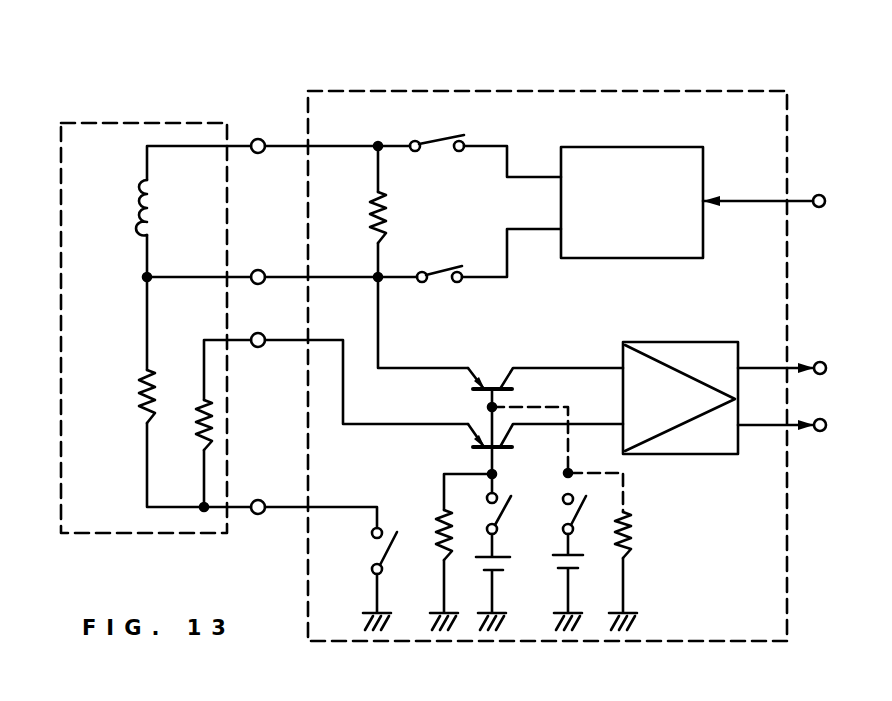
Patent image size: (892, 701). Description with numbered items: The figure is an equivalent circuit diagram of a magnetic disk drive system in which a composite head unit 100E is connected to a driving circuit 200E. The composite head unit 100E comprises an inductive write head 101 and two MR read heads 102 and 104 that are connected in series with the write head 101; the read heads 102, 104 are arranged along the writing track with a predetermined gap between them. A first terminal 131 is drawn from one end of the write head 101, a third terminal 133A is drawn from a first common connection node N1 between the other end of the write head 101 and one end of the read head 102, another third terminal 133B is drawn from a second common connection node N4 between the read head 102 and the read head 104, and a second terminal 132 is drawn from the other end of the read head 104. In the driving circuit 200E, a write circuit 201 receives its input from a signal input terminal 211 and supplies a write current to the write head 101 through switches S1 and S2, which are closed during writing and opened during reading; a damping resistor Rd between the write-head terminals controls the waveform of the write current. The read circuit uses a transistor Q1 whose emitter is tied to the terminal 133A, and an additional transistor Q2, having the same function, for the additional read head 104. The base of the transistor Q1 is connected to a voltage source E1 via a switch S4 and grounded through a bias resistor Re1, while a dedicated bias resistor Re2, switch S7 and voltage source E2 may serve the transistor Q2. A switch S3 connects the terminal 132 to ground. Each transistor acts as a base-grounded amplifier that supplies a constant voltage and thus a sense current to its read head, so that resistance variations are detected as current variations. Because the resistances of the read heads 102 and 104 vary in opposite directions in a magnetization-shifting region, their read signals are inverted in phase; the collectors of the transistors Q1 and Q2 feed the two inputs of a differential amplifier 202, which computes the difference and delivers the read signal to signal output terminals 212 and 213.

The composite head unit 100E is at (167, 122).
The inductive write head 101 is at (144, 209).
The MR read head 102 is at (136, 392).
The MR read head 104 is at (196, 406).
The first common connection node N1 is at (143, 282).
The second common connection node N4 is at (203, 504).
The first terminal 131 is at (258, 138).
The second terminal 132 is at (258, 502).
The third terminal 133A is at (258, 270).
The third terminal 133B is at (258, 348).
The driving circuit 200E is at (682, 90).
The write circuit 201 is at (624, 147).
The differential amplifier 202 is at (700, 318).
The signal input terminal 211 is at (818, 194).
The signal output terminal 212 is at (820, 362).
The signal output terminal 213 is at (820, 432).
The switch S1 is at (440, 144).
The switch S2 is at (440, 271).
The switch S3 is at (372, 557).
The switch S4 is at (505, 496).
The switch S7 is at (574, 518).
The damping resistor Rd is at (370, 222).
The bias resistor Re1 is at (432, 520).
The bias resistor Re2 is at (634, 534).
The transistor Q1 is at (490, 378).
The transistor Q2 is at (486, 430).
The voltage source E1 is at (506, 566).
The voltage source E2 is at (556, 572).